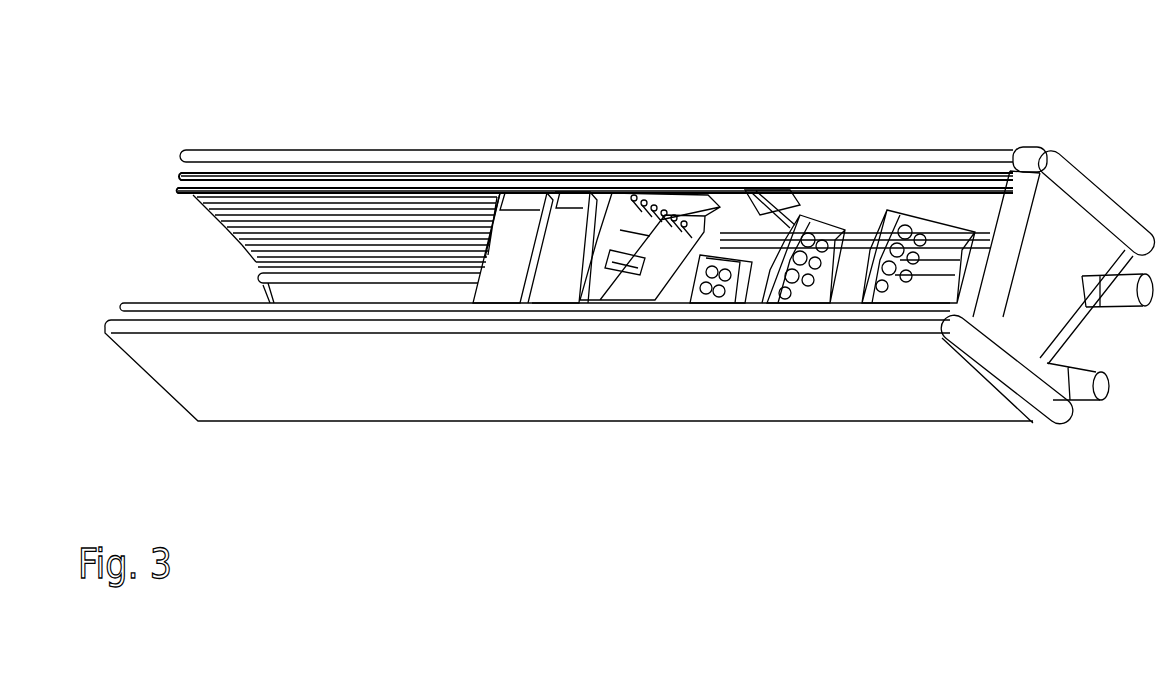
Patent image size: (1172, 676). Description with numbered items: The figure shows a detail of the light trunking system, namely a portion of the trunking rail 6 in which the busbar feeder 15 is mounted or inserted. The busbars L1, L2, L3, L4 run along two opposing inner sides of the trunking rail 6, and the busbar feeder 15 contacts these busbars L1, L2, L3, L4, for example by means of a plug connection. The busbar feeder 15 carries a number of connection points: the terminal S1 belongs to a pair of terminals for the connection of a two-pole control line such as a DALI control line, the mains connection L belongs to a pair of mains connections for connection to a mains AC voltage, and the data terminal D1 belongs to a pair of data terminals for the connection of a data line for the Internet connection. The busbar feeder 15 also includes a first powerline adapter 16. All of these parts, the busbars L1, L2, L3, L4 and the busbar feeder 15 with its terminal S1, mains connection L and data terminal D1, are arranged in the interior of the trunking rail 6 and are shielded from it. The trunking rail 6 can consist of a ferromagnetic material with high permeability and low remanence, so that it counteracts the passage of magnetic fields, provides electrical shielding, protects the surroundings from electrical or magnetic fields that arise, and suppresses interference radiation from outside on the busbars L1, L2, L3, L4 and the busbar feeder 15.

The trunking rail 6 is at (590, 393).
The busbar feeder 15 is at (870, 57).
The first powerline adapter 16 is at (518, 228).
The data terminal D1 is at (613, 215).
The mains connection L is at (734, 252).
The terminal S1 is at (824, 232).
The busbar L1 is at (198, 208).
The busbar L2 is at (210, 224).
The busbar L3 is at (218, 233).
The busbar L4 is at (233, 246).